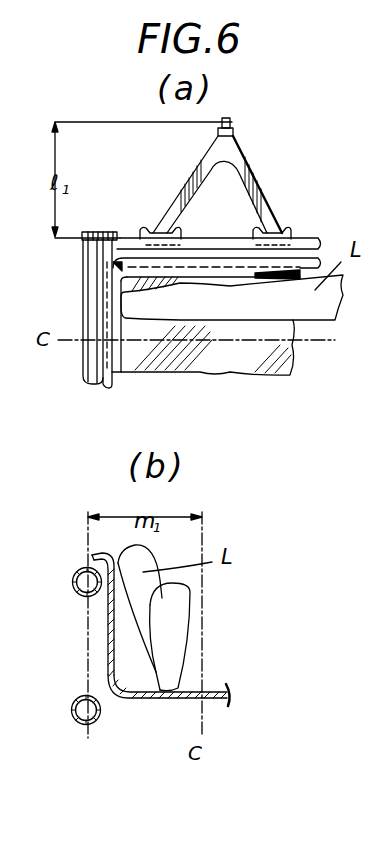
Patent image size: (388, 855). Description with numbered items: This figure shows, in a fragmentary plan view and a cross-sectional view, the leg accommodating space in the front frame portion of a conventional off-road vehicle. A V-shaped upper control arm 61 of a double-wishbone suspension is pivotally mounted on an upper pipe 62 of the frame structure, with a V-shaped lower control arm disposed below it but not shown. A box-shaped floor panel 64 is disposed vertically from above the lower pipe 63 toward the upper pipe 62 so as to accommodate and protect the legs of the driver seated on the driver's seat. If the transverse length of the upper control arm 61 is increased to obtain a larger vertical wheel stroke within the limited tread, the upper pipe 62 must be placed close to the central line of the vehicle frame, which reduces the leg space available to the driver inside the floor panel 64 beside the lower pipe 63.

The V-shaped upper control arm 61 is at (243, 175).
The upper pipe 62 is at (213, 246).
The lower pipe 63 is at (72, 704).
The box-shaped floor panel 64 is at (221, 362).